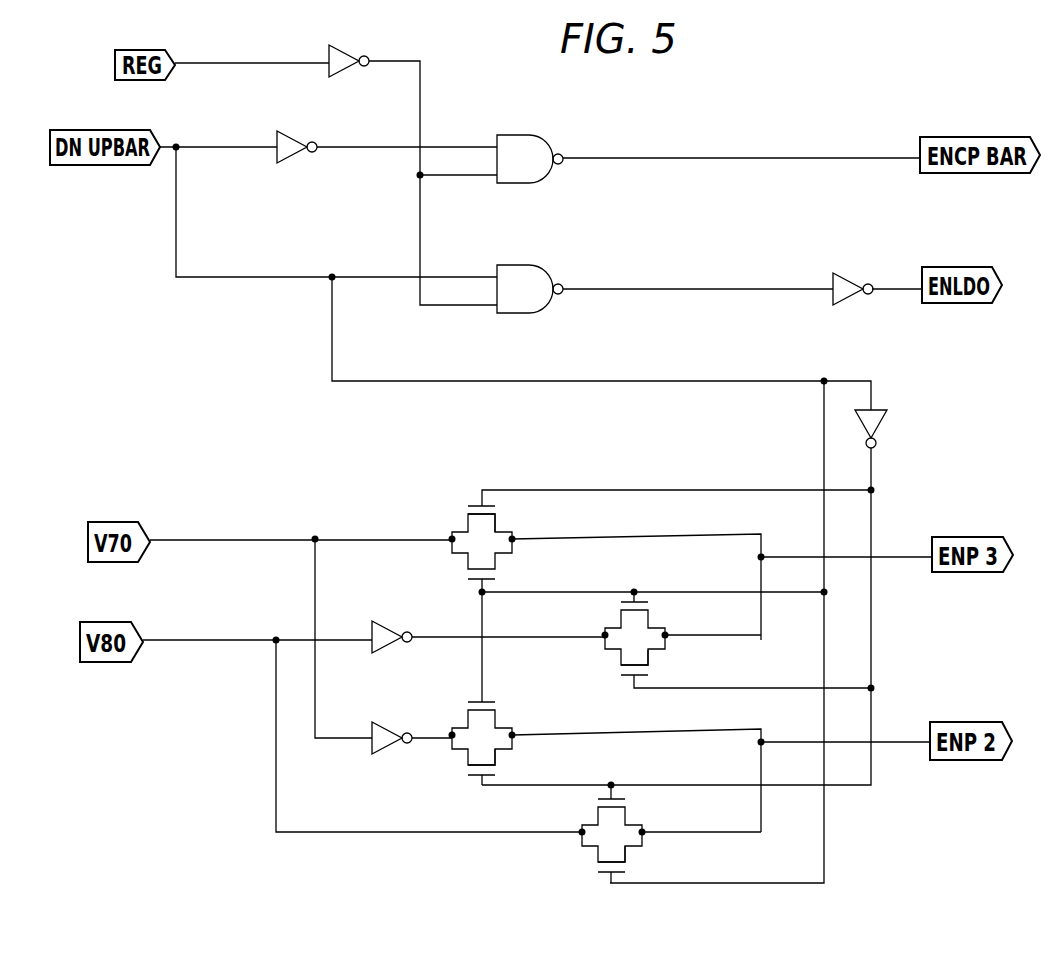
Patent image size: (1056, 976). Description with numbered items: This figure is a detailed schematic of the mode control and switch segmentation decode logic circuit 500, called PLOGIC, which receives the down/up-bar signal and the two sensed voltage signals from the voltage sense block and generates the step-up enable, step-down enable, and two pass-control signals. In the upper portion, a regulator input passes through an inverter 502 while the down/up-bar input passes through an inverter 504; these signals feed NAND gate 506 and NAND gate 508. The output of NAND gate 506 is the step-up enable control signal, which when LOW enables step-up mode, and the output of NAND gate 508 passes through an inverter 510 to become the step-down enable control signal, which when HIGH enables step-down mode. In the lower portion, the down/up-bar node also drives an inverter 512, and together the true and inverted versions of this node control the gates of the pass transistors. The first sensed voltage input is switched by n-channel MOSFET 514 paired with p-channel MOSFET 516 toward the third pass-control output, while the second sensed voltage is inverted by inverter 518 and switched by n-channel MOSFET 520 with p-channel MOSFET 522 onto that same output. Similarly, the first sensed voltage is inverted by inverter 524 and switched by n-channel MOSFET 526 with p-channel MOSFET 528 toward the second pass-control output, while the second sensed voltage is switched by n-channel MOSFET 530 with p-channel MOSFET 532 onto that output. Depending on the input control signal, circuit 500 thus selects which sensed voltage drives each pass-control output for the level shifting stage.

The mode control and switch segmentation decode logic circuit 500 is at (920, 102).
The inverter 502 is at (345, 72).
The inverter 504 is at (291, 158).
The NAND gate 506 is at (543, 140).
The NAND gate 508 is at (540, 268).
The inverter 510 is at (852, 278).
The inverter 512 is at (875, 430).
The n-channel MOSFET 514 is at (467, 523).
The p-channel MOSFET 516 is at (467, 556).
The inverter 518 is at (392, 648).
The n-channel MOSFET 520 is at (653, 617).
The p-channel MOSFET 522 is at (650, 662).
The inverter 524 is at (382, 724).
The n-channel MOSFET 526 is at (495, 708).
The p-channel MOSFET 528 is at (462, 752).
The n-channel MOSFET 530 is at (596, 818).
The p-channel MOSFET 532 is at (596, 853).